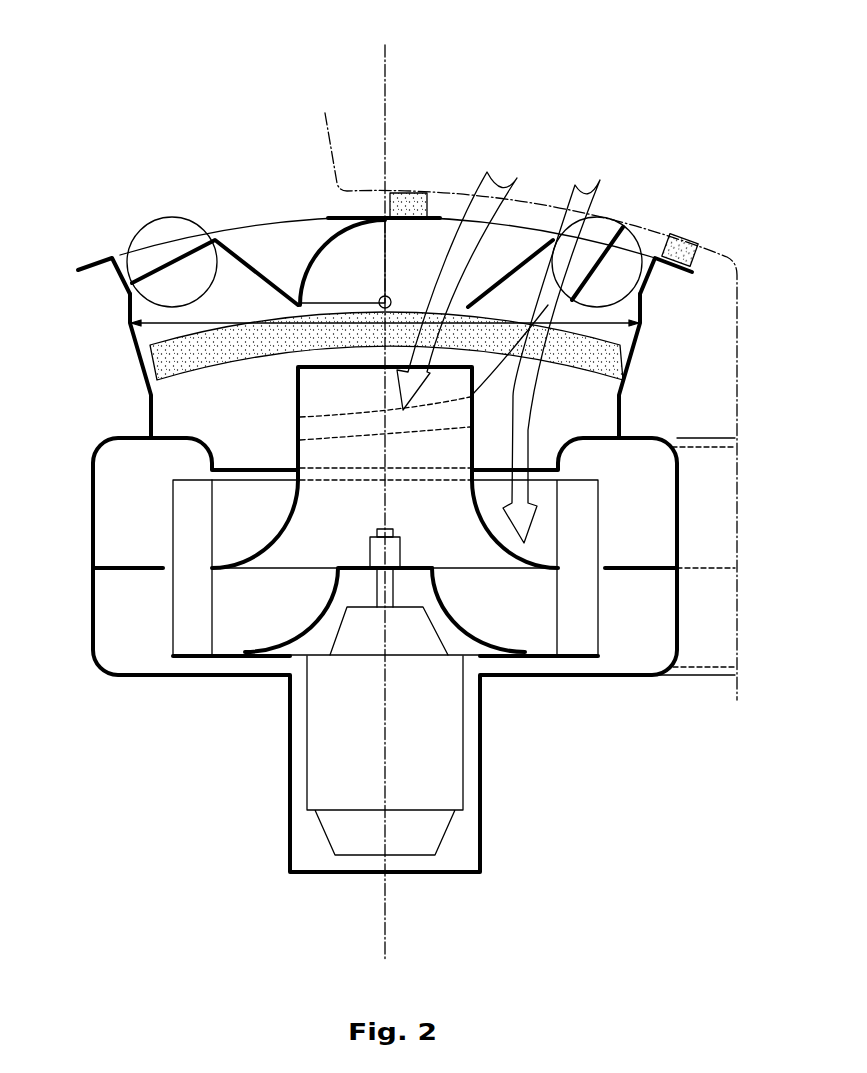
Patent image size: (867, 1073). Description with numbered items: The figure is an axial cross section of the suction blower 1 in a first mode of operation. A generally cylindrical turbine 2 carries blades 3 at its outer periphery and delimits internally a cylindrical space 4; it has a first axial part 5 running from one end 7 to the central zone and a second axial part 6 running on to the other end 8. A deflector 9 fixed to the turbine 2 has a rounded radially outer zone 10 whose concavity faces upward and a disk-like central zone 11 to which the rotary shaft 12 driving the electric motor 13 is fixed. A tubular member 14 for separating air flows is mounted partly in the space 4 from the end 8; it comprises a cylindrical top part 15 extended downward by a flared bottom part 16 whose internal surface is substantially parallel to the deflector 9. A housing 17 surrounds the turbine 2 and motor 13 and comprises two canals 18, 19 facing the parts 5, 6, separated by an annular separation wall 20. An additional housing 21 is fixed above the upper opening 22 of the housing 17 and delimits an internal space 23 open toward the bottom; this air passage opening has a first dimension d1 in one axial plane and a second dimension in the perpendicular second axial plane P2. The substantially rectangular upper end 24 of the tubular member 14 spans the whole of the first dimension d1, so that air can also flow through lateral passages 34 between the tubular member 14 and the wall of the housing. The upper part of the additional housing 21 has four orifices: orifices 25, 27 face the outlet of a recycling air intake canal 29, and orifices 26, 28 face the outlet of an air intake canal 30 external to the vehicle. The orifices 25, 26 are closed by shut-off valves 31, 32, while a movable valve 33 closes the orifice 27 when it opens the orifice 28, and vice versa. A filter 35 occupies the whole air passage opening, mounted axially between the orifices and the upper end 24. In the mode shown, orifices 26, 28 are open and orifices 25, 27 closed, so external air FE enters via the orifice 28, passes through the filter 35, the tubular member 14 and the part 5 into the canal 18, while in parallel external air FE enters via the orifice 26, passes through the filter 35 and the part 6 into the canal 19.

The suction blower 1 is at (648, 762).
The turbine 2 is at (536, 601).
The blades 3 is at (578, 630).
The cylindrical space 4 is at (495, 625).
The first axial part 5 is at (190, 620).
The second axial part 6 is at (187, 542).
The end 7 is at (197, 657).
The end 8 is at (187, 478).
The deflector 9 is at (323, 649).
The rounded radially outer zone 10 is at (280, 640).
The central zone 11 is at (360, 570).
The rotary shaft 12 is at (390, 600).
The electric motor 13 is at (438, 765).
The tubular member 14 is at (502, 418).
The cylindrical top part 15 is at (473, 447).
The bottom part 16 is at (508, 552).
The housing 17 is at (717, 438).
The canal 18 is at (117, 618).
The canal 19 is at (110, 490).
The annular separation wall 20 is at (128, 570).
The additional housing 21 is at (643, 311).
The upper opening 22 is at (217, 470).
The internal space 23 is at (178, 400).
The upper end 24 is at (298, 367).
The orifice 25 is at (119, 234).
The orifice 26 is at (648, 194).
The orifice 27 is at (251, 203).
The orifice 28 is at (462, 171).
The recycling air intake canal 29 is at (198, 157).
The air intake canal external to the vehicle 30 is at (608, 130).
The shut-off valve 31 is at (180, 257).
The shut-off valve 32 is at (628, 263).
The movable valve 33 is at (317, 254).
The lateral passages 34 is at (244, 413).
The filter 35 is at (600, 357).
The first dimension d1 is at (200, 322).
The second axial plane P2 is at (385, 97).
The external air FE is at (490, 190).